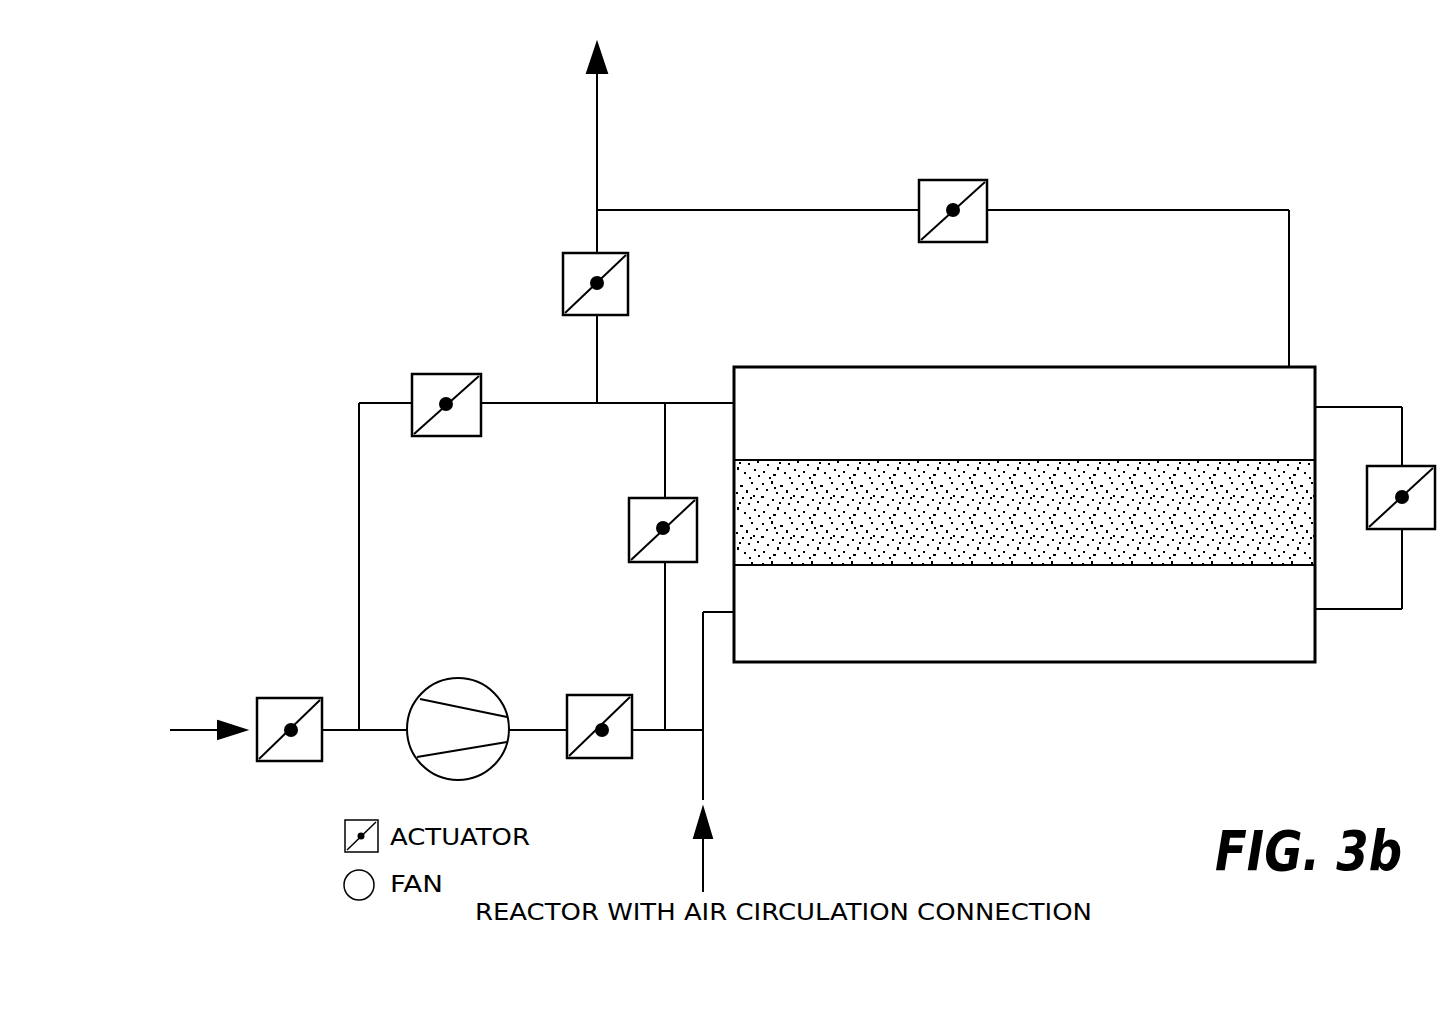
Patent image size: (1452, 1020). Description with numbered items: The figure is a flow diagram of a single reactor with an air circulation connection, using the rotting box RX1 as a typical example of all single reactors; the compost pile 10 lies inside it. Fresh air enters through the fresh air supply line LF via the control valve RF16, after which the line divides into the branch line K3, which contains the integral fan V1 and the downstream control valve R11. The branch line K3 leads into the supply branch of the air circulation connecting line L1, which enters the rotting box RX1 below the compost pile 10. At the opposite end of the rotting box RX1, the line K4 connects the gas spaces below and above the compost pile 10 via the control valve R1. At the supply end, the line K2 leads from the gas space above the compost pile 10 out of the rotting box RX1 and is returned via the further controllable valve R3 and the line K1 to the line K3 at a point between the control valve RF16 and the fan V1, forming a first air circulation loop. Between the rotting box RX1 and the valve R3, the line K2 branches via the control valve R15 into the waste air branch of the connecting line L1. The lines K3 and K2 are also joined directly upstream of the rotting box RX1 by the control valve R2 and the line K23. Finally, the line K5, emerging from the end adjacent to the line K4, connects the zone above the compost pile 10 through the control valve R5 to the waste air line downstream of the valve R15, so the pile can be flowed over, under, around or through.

The air circulation connecting line L1 is at (597, 125).
The line K1 is at (359, 559).
The line K2 is at (621, 403).
The branch line K3 is at (382, 728).
The line K4 is at (1402, 570).
The line K5 is at (1289, 207).
The line K23 is at (663, 628).
The control valve R1 is at (1410, 466).
The control valve R2 is at (644, 498).
The controllable valve R3 is at (483, 378).
The control valve R5 is at (953, 243).
The control valve R11 is at (567, 708).
The control valve R15 is at (630, 285).
The control valve RF16 is at (303, 761).
The fan V1 is at (461, 678).
The fresh air supply line LF is at (237, 696).
The rotting box RX1 is at (1024, 514).
The compost pile 10 is at (988, 547).